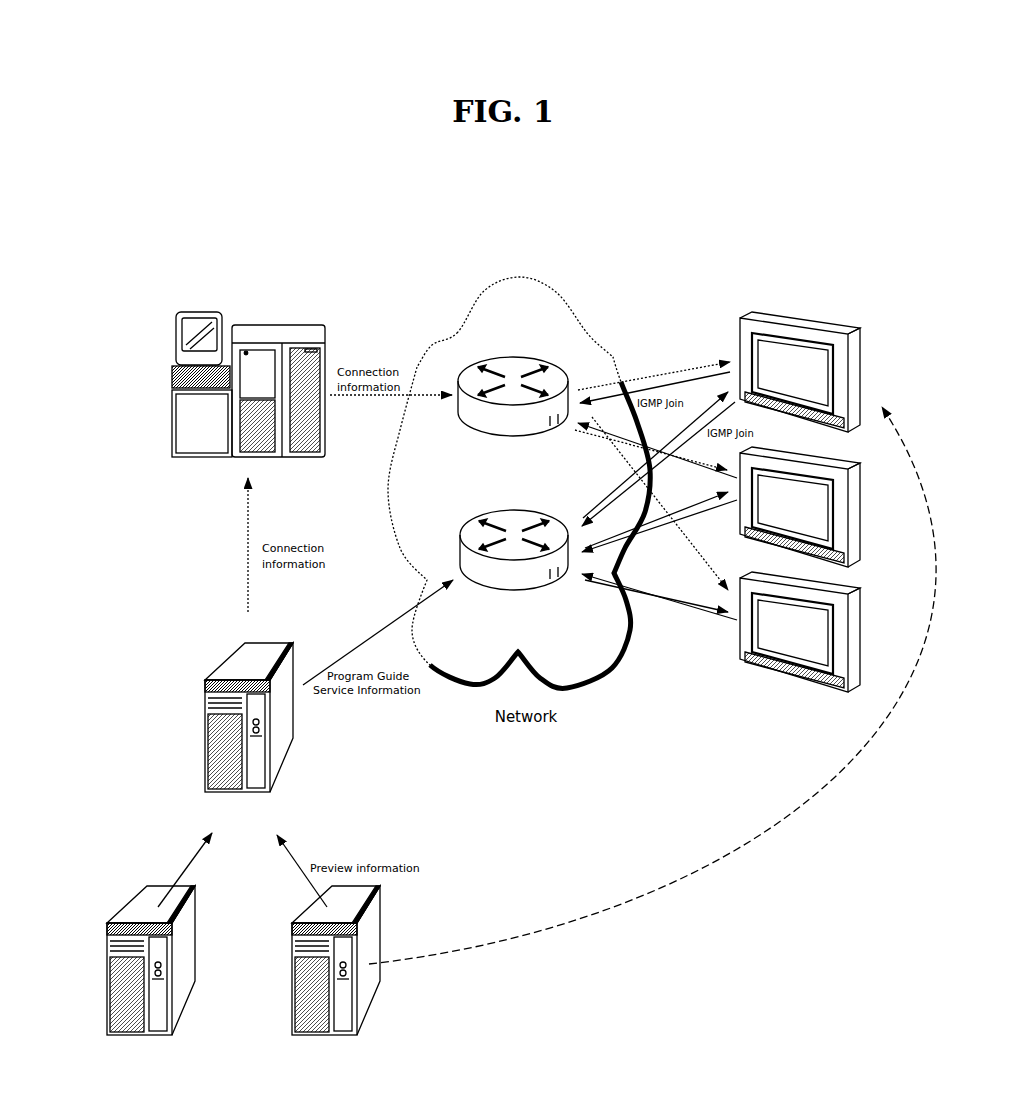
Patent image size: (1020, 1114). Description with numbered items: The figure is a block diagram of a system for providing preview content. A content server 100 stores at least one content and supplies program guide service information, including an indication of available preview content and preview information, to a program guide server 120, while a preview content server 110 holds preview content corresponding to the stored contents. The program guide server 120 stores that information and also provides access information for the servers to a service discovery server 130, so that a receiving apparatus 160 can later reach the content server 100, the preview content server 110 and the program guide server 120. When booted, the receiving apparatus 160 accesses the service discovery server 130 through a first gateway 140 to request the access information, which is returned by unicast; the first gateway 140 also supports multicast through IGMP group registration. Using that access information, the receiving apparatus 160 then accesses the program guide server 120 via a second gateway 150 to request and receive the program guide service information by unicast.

The content server 100 is at (141, 906).
The preview content server 110 is at (370, 934).
The program guide server 120 is at (236, 668).
The service discovery server 130 is at (272, 325).
The first gateway 140 is at (510, 358).
The second gateway 150 is at (472, 526).
The receiving apparatus 160 is at (843, 342).